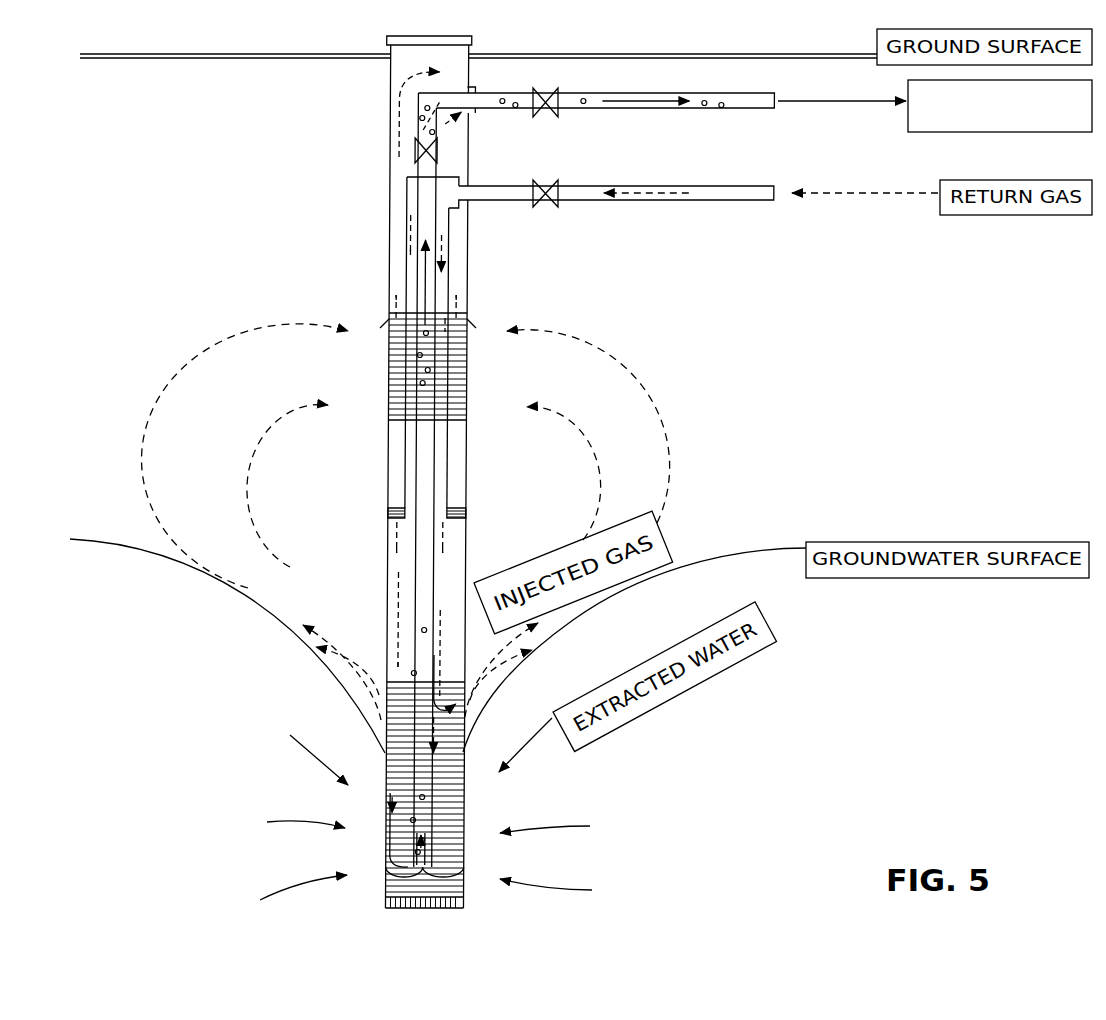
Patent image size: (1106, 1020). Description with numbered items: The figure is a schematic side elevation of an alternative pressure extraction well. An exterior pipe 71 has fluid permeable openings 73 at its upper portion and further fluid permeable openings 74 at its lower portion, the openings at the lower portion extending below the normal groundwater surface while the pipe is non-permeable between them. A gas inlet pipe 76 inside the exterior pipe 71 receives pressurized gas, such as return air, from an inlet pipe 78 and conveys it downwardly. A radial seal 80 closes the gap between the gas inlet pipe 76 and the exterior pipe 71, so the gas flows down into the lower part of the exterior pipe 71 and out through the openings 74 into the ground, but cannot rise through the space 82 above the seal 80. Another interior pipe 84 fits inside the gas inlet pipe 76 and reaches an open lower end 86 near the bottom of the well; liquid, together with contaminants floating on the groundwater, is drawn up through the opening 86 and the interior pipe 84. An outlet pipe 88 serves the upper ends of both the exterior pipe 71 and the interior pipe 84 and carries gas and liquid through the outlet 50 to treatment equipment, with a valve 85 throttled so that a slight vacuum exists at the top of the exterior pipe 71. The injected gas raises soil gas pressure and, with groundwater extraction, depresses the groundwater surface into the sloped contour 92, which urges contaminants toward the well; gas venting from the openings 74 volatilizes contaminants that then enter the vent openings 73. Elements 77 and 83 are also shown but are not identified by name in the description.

The outlet 50 is at (784, 104).
The exterior pipe 71 is at (468, 290).
The fluid permeable openings 73 is at (468, 345).
The fluid permeable openings 74 is at (464, 789).
The gas inlet pipe 76 is at (449, 267).
The return gas valve 77 is at (537, 205).
The inlet pipe 78 is at (637, 186).
The radial seal 80 is at (452, 516).
The space 82 is at (457, 482).
The riser tube 83 is at (440, 146).
The interior pipe 84 is at (440, 167).
The valve 85 is at (537, 113).
The open lower end 86 is at (464, 840).
The outlet pipe 88 is at (632, 108).
The groundwater surface contour 92 is at (600, 603).